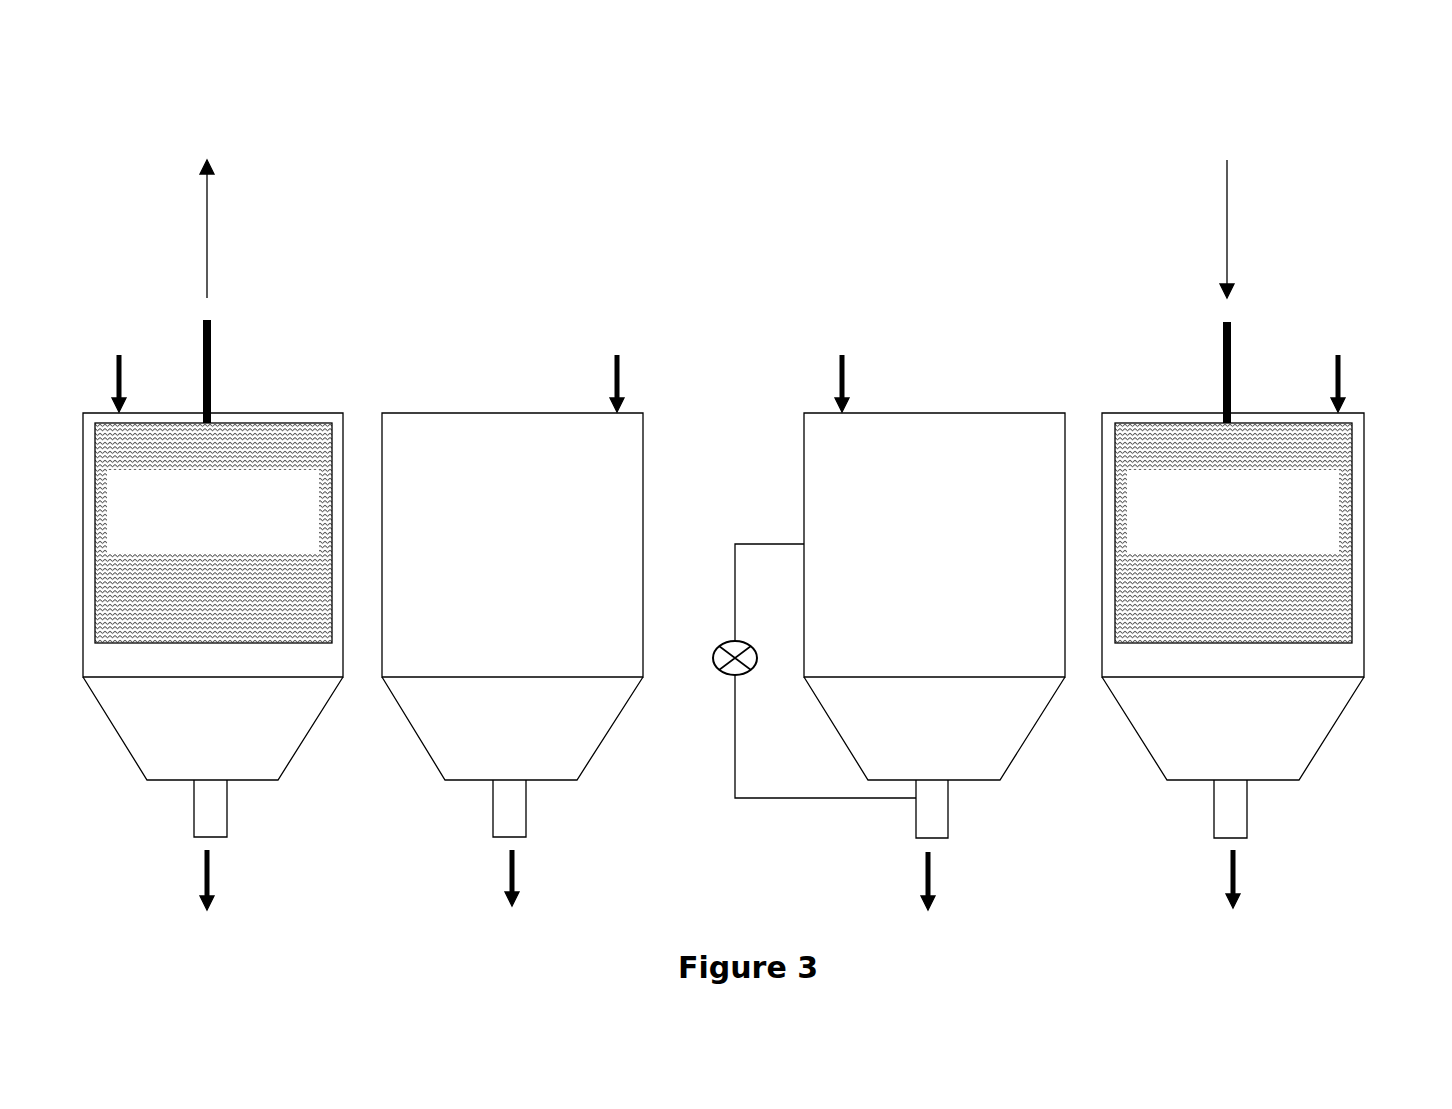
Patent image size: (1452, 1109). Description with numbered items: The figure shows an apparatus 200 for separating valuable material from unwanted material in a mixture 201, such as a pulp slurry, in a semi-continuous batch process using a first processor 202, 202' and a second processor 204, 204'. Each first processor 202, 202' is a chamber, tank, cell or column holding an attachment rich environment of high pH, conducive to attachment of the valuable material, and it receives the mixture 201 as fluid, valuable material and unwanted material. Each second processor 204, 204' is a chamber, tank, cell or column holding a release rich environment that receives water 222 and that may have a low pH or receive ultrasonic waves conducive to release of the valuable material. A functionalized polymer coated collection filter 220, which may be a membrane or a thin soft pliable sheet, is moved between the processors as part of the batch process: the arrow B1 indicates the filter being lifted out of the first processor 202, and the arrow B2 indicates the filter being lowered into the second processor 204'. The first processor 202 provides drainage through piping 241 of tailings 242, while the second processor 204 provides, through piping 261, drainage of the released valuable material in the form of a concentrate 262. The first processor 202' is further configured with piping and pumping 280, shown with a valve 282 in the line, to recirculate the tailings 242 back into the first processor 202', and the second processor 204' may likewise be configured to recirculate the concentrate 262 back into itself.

The apparatus 200 is at (142, 150).
The mixture 201 is at (479, 347).
The first processor 202 is at (228, 531).
The first processor 202' is at (881, 541).
The second processor 204 is at (549, 596).
The second processor 204' is at (1270, 574).
The functionalized polymer coated collection filter 220 is at (249, 422).
The water 222 is at (977, 354).
The piping 241 is at (194, 817).
The tailings 242 is at (528, 887).
The piping 261 is at (526, 815).
The concentrate 262 is at (940, 886).
The piping and pumping 280 is at (735, 594).
The valve 282 is at (716, 670).
The arrow B1 is at (207, 213).
The arrow B2 is at (1227, 212).